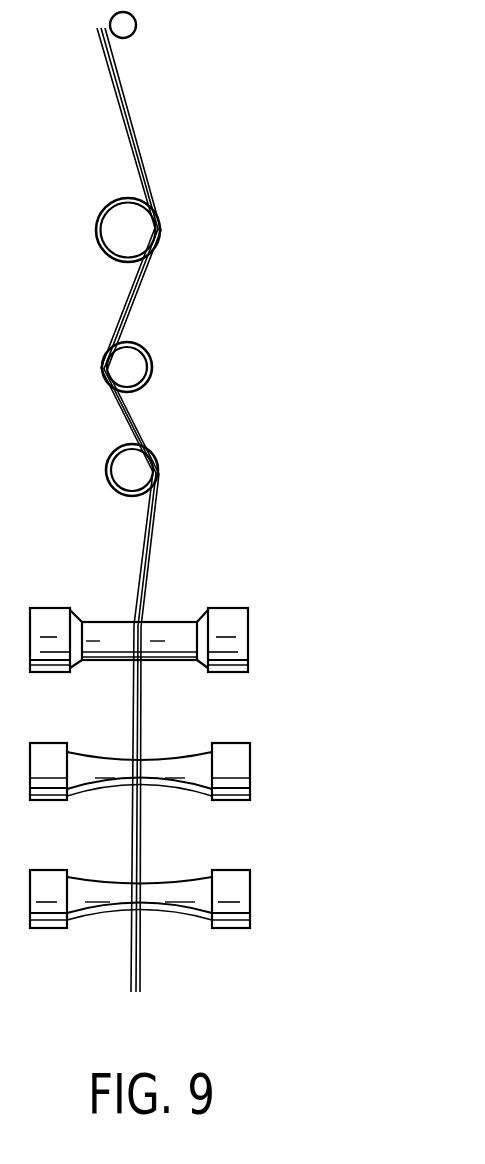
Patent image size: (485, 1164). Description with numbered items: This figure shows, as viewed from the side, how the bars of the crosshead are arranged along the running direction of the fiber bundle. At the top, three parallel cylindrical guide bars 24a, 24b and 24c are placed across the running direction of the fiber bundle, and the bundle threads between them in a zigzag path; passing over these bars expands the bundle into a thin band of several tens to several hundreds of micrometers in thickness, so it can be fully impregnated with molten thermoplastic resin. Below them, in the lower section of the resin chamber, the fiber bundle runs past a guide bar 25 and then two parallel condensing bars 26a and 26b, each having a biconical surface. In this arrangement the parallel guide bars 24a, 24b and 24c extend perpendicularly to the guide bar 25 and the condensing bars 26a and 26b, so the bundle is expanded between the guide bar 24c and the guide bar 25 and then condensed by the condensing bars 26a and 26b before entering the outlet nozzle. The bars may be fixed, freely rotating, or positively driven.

The parallel guide bar 24a is at (133, 233).
The parallel guide bar 24b is at (135, 367).
The parallel guide bar 24c is at (132, 472).
The guide bar 25 is at (228, 628).
The condensing bar 26a is at (228, 763).
The condensing bar 26b is at (228, 893).